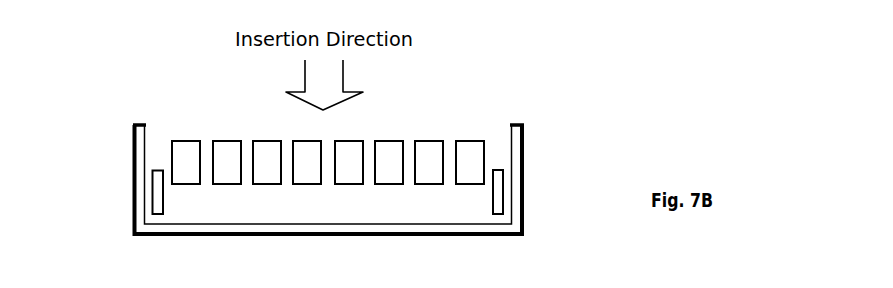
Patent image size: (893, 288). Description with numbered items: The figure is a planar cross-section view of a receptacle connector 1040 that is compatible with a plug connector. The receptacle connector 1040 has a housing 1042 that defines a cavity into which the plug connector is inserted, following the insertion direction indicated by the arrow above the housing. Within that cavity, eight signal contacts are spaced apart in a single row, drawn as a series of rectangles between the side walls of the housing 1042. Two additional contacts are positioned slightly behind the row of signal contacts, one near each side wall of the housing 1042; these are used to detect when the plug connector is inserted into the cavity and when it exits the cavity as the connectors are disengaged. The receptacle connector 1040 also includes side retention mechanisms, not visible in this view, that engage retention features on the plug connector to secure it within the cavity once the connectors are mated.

The receptacle connector 1040 is at (313, 146).
The housing 1042 is at (133, 183).